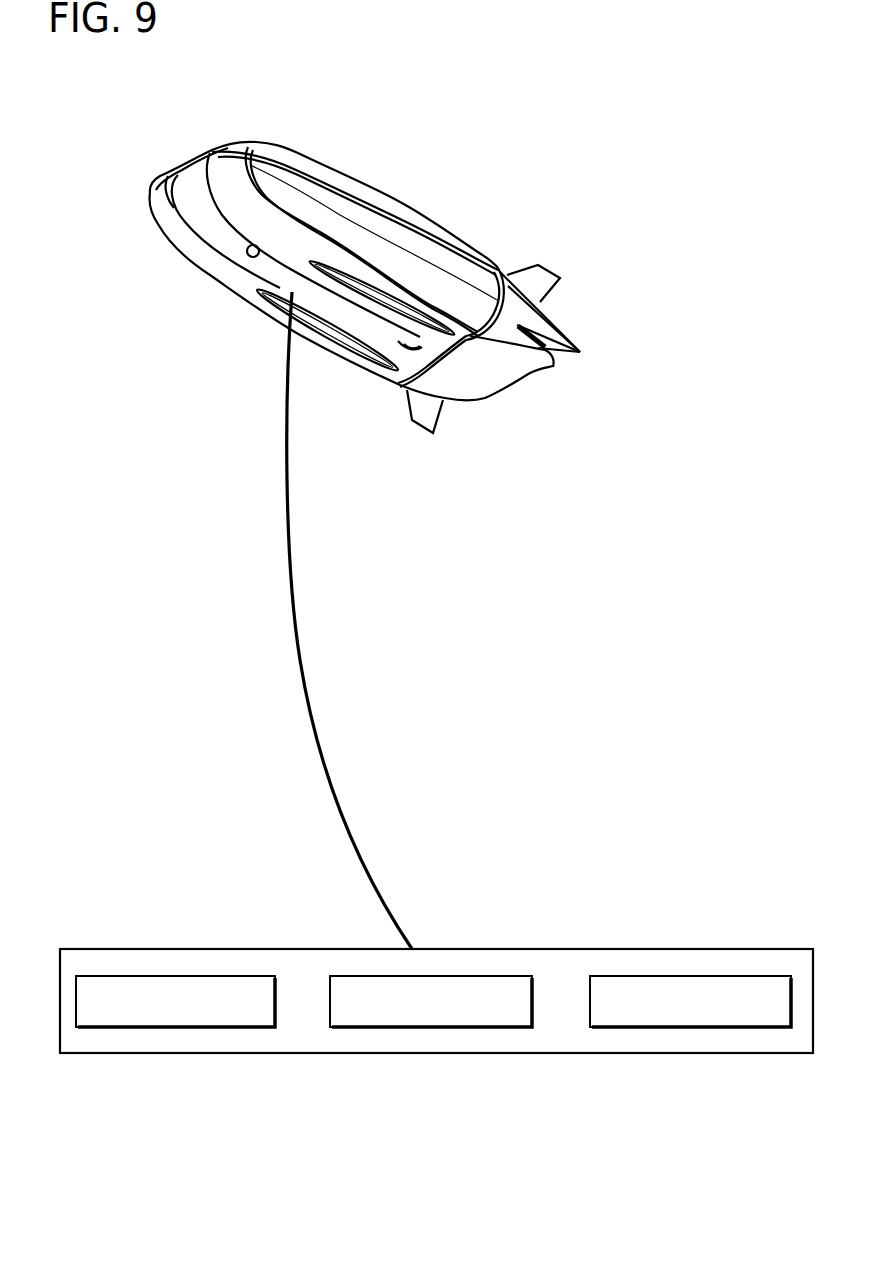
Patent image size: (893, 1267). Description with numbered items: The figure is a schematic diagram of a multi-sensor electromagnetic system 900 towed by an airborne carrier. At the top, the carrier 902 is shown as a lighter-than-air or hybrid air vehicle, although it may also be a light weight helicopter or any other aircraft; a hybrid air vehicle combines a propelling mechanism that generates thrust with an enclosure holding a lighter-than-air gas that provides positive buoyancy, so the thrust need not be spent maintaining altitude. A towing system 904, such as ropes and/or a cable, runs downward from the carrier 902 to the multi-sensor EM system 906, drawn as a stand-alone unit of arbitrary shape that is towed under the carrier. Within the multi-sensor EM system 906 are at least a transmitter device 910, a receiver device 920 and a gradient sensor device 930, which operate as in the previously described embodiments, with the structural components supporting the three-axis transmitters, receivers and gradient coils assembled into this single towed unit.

The system 900 is at (487, 97).
The carrier 902 is at (480, 195).
The towing system 904 is at (301, 656).
The multi-sensor EM system 906 is at (702, 950).
The transmitter device 910 is at (183, 1027).
The receiver device 920 is at (441, 1027).
The gradient sensor device 930 is at (687, 1027).